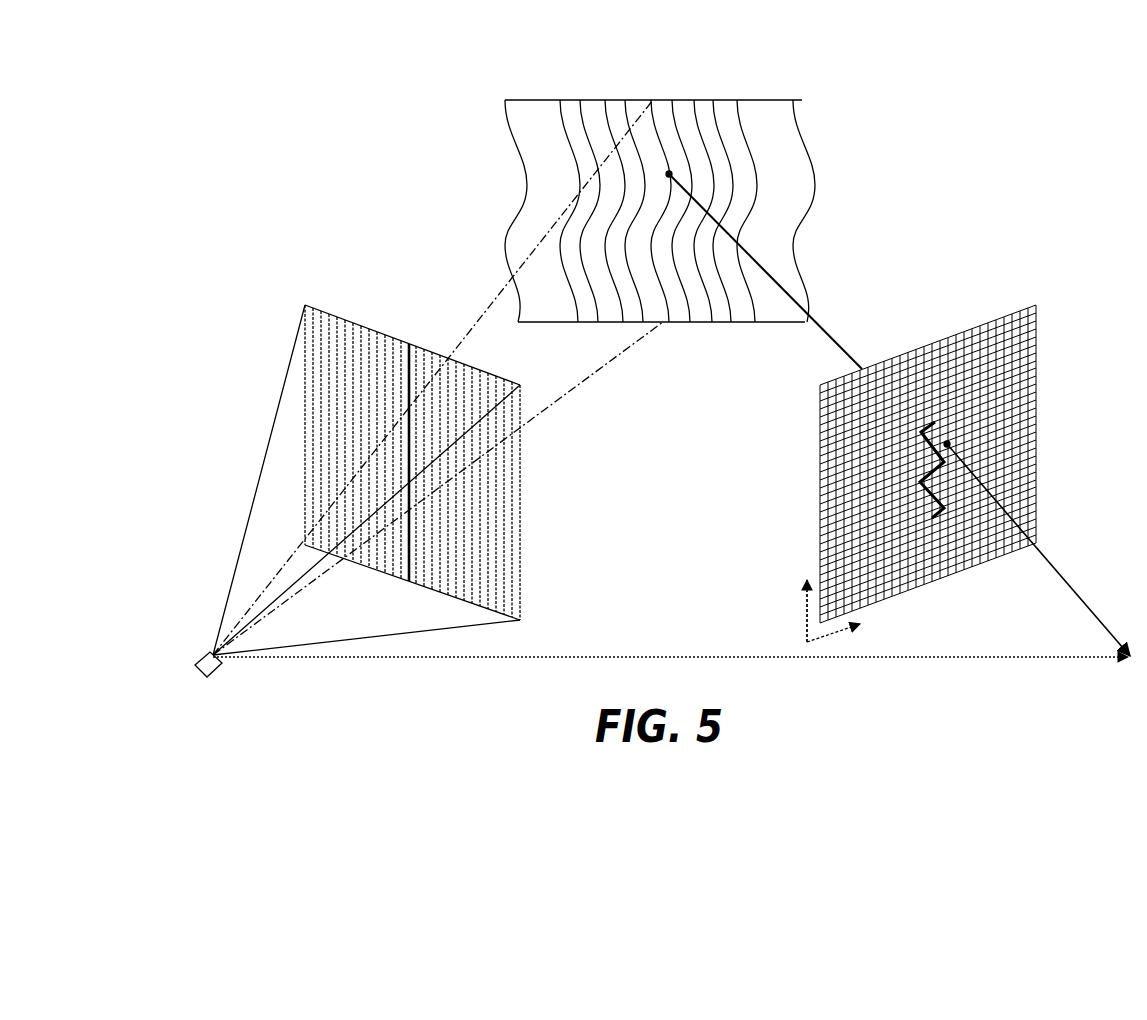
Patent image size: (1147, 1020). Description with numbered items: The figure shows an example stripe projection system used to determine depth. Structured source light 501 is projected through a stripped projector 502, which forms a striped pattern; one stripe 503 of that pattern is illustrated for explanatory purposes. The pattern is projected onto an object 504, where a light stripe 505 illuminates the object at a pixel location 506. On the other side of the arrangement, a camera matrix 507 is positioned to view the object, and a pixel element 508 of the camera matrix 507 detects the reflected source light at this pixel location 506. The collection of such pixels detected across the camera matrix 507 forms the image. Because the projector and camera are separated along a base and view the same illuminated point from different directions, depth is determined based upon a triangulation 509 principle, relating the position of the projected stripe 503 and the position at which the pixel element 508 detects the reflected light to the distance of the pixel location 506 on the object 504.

The structured source light 501 is at (207, 653).
The stripped projector 502 is at (522, 505).
The stripe 503 is at (408, 336).
The object 504 is at (516, 100).
The light stripe 505 is at (661, 134).
The pixel location 506 is at (672, 172).
The camera matrix 507 is at (966, 320).
The pixel element 508 is at (957, 440).
The triangulation 509 is at (872, 660).